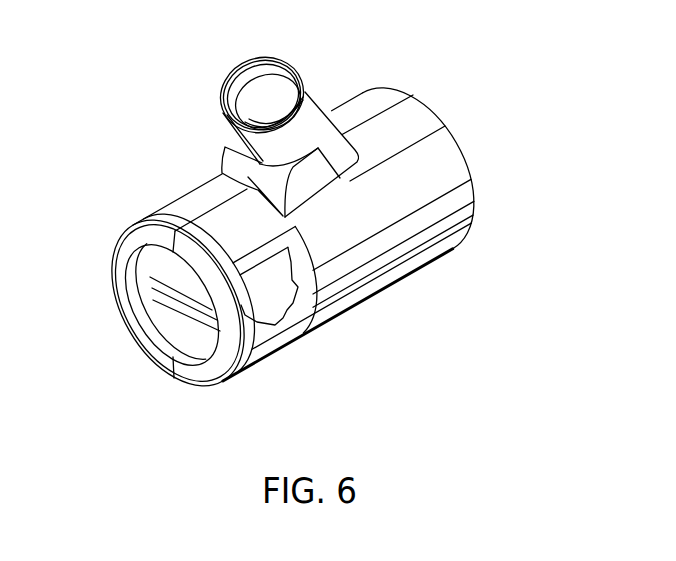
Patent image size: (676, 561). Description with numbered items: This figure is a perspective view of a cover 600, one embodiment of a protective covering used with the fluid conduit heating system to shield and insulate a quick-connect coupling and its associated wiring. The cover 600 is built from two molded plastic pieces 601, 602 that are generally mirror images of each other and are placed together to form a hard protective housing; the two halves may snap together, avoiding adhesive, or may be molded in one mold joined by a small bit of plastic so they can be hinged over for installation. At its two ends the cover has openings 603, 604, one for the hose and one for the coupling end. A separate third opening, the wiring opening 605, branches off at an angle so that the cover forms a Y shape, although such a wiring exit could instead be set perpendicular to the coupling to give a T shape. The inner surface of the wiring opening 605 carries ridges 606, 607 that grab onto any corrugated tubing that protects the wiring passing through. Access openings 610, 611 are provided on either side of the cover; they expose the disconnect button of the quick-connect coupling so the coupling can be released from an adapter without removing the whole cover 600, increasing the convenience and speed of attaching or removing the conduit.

The cover 600 is at (150, 130).
The cover piece 601 is at (170, 183).
The cover piece 602 is at (330, 330).
The opening 603 is at (175, 390).
The opening 604 is at (445, 113).
The wiring opening 605 is at (215, 73).
The ridge 606 is at (281, 70).
The ridge 607 is at (302, 79).
The access opening 610 is at (267, 370).
The access opening 611 is at (133, 305).